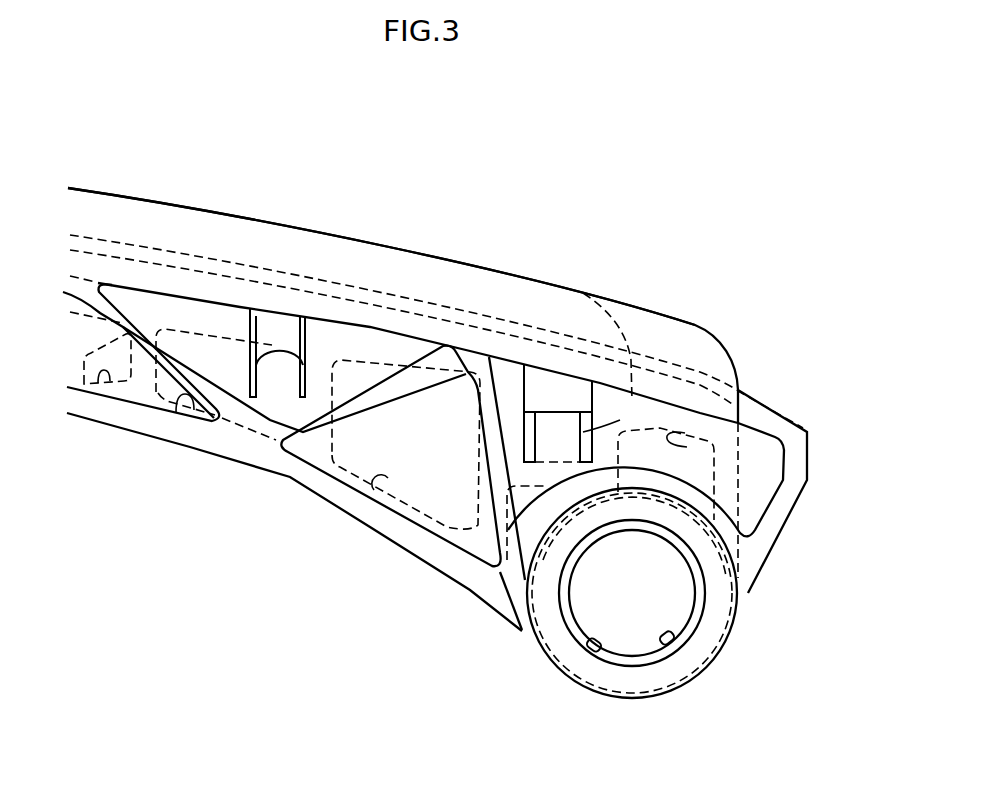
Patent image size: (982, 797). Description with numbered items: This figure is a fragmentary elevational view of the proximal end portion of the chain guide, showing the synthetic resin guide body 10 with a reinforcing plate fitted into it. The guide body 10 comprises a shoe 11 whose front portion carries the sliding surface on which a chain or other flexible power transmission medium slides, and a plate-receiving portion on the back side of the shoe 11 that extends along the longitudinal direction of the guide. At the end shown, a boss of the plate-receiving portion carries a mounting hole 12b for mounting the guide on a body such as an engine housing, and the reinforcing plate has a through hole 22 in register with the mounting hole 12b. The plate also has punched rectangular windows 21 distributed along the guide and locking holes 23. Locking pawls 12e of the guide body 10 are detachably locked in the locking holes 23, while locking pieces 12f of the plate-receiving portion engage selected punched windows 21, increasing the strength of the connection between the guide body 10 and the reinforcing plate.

The guide body 10 is at (258, 215).
The shoe 11 is at (473, 262).
The mounting hole 12b is at (592, 640).
The locking pawls 12e is at (556, 428).
The locking pieces 12f is at (278, 365).
The punched rectangular windows 21 is at (83, 390).
The through hole 22 is at (678, 640).
The locking holes 23 is at (589, 440).